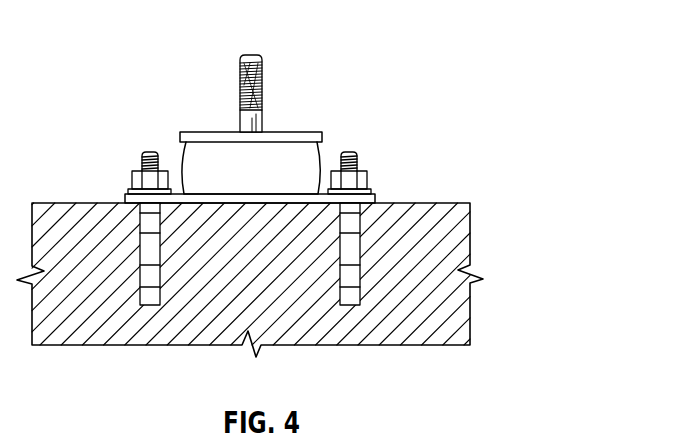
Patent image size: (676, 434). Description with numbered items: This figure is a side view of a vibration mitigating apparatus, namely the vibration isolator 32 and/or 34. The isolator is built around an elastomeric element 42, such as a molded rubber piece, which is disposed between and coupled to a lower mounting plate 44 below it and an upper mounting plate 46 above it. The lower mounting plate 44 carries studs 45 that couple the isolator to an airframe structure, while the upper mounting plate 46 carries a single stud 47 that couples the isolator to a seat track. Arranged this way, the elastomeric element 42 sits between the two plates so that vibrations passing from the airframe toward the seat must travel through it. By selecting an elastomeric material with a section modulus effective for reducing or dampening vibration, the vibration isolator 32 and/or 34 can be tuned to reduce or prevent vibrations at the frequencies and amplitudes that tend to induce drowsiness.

The vibration isolator 32 is at (276, 197).
The vibration isolator 34 is at (377, 3).
The elastomeric element 42 is at (192, 152).
The lower mounting plate 44 is at (125, 197).
The studs 45 is at (148, 276).
The upper mounting plate 46 is at (218, 131).
The stud 47 is at (240, 78).